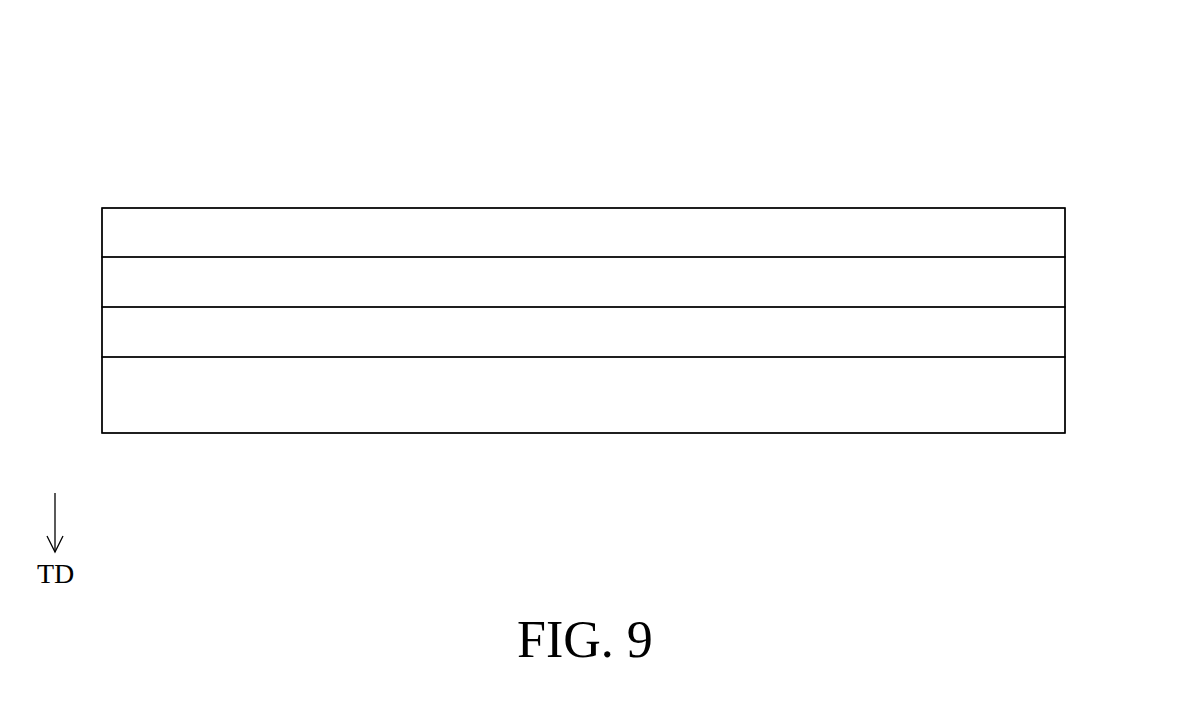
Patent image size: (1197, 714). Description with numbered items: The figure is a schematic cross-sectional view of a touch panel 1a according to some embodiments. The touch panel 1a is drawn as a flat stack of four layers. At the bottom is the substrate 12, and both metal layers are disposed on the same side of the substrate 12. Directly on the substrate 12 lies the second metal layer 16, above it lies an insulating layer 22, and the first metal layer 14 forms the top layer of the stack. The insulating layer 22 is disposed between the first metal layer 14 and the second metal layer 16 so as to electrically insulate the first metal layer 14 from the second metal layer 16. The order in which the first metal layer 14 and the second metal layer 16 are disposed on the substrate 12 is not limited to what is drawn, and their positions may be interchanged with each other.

The touch panel 1a is at (1038, 105).
The substrate 12 is at (1048, 397).
The second metal layer 16 is at (1048, 337).
The insulating layer 22 is at (1048, 287).
The first metal layer 14 is at (1048, 232).